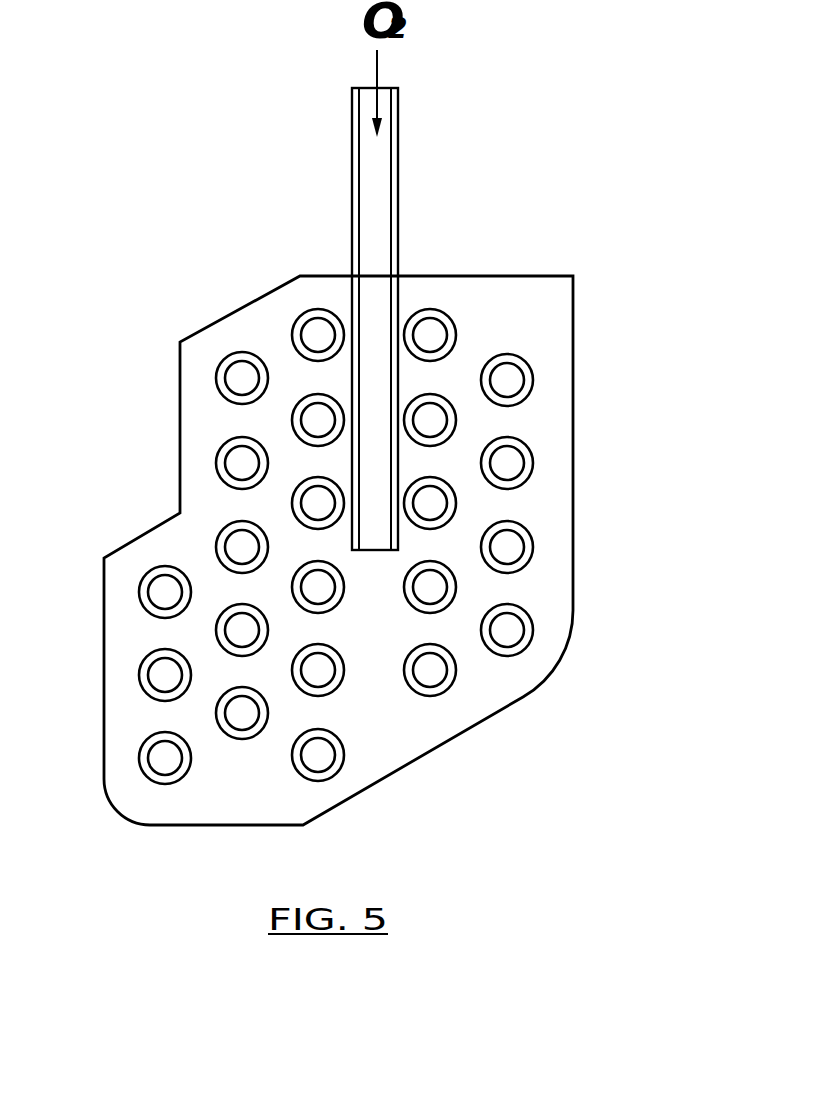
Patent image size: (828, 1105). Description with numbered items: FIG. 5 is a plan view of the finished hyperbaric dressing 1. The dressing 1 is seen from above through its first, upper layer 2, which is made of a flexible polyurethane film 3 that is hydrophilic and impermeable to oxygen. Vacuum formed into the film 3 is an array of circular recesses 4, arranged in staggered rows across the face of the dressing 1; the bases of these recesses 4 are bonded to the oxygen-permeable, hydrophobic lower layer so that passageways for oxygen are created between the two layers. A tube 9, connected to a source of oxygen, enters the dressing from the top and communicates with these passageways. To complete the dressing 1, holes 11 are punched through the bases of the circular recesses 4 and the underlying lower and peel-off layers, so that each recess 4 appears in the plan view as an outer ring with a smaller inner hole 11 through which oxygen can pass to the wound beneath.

The hyperbaric dressing 1 is at (376, 492).
The first, upper layer 2 is at (379, 512).
The polyurethane film 3 is at (271, 331).
The circular recesses 4 is at (221, 385).
The tube 9 is at (398, 296).
The holes 11 is at (232, 370).